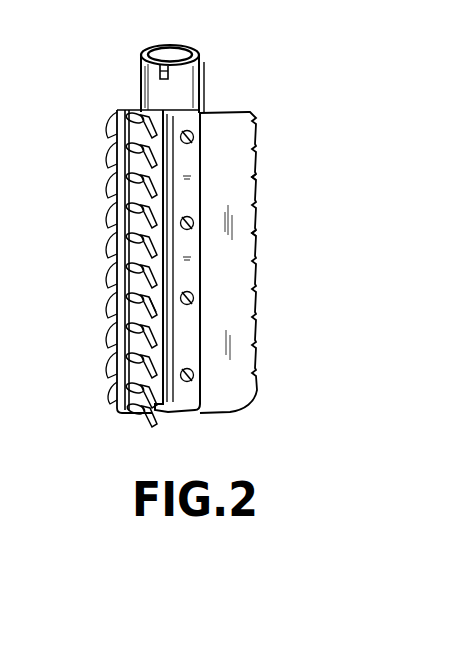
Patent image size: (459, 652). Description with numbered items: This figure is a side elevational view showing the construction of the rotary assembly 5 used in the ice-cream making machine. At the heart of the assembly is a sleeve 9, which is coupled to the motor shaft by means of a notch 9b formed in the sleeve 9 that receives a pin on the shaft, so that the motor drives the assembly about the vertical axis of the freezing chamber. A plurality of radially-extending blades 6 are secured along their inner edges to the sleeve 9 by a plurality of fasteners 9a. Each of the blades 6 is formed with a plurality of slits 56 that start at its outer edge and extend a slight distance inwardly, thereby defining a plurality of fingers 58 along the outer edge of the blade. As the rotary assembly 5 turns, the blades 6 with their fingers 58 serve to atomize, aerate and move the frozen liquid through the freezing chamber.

The rotary assembly 5 is at (283, 106).
The sleeve 9 is at (205, 86).
The fasteners 9a is at (195, 136).
The notch 9b is at (158, 74).
The blades 6 is at (240, 198).
The slits 56 is at (256, 178).
The fingers 58 is at (258, 246).